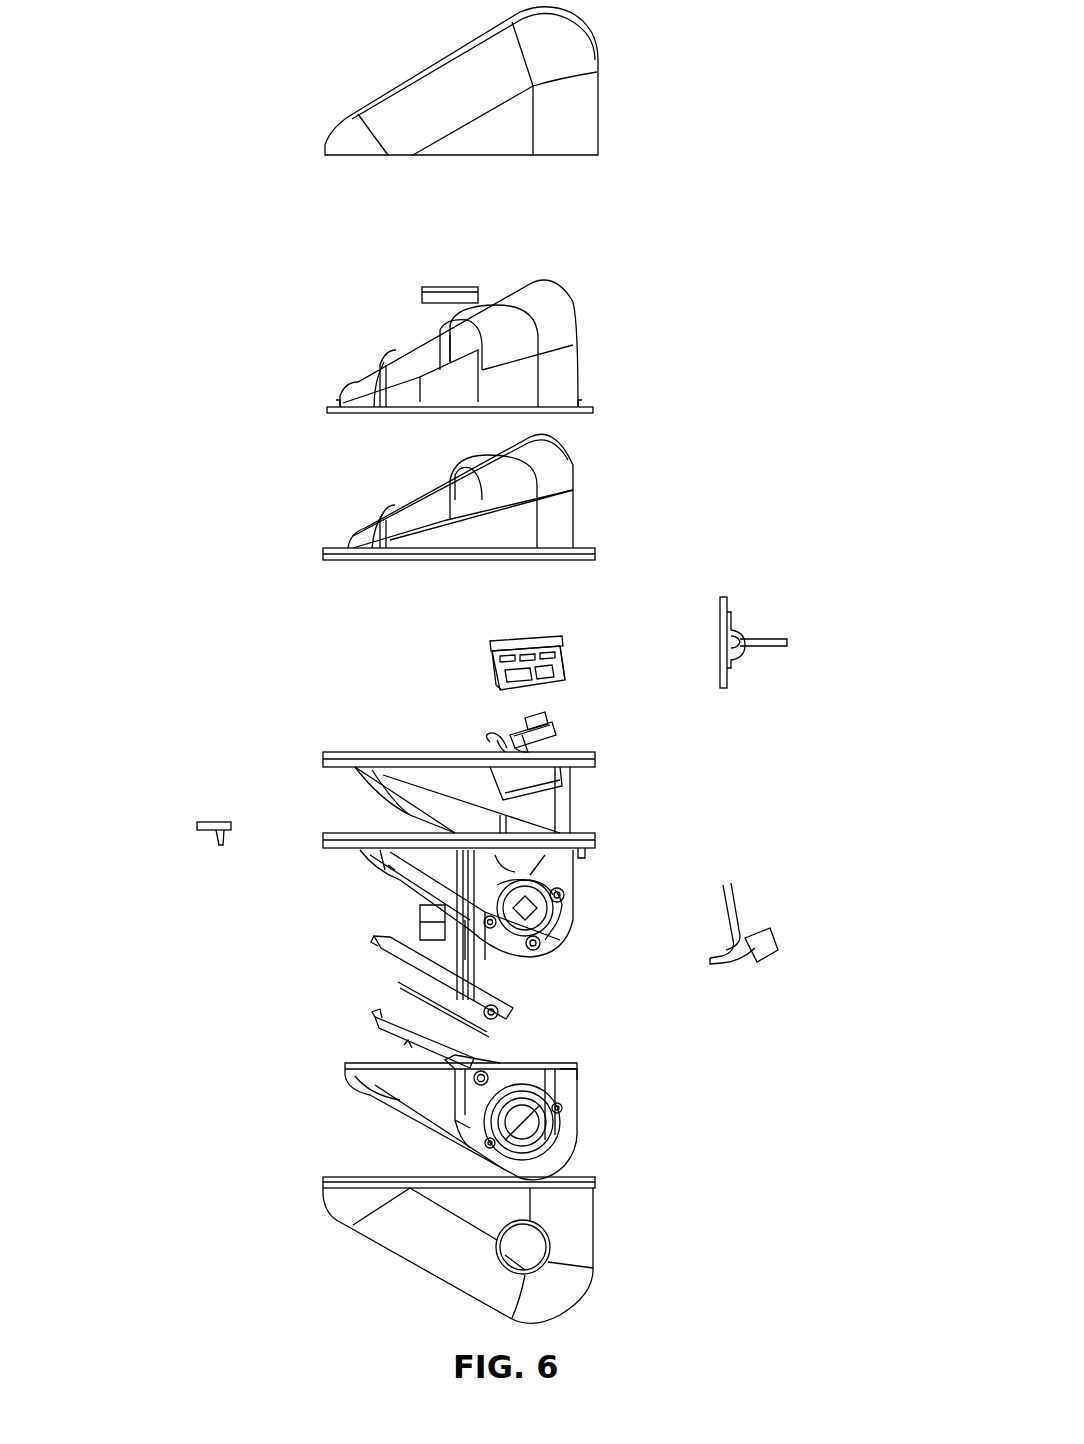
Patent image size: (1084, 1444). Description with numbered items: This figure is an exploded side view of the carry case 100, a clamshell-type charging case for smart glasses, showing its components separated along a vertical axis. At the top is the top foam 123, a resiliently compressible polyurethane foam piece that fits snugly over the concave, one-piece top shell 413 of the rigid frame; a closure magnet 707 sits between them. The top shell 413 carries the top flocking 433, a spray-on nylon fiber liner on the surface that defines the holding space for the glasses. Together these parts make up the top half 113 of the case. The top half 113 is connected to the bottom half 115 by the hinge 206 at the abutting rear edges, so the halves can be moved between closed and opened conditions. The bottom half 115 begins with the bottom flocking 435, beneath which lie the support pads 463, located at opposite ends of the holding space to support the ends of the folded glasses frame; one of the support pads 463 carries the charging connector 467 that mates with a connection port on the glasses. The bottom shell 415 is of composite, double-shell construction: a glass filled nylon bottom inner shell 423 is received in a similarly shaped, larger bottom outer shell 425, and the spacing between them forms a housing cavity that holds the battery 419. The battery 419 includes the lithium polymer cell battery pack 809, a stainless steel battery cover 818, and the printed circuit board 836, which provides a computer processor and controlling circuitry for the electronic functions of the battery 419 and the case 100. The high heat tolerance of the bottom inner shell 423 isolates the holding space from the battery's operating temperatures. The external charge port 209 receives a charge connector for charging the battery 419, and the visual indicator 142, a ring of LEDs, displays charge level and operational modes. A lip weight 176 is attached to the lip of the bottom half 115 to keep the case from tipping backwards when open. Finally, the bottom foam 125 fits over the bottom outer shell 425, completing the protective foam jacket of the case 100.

The carry case 100 is at (712, 232).
The top half 113 is at (238, 298).
The bottom half 115 is at (262, 1032).
The top foam 123 is at (572, 38).
The bottom foam 125 is at (575, 1296).
The visual indicator 142 is at (563, 1127).
The lip weight 176 is at (208, 822).
The hinge 206 is at (743, 640).
The external charge port 209 is at (768, 956).
The top shell 413 is at (560, 310).
The bottom shell 415 is at (612, 930).
The battery 419 is at (305, 934).
The bottom inner shell 423 is at (420, 890).
The bottom outer shell 425 is at (385, 1100).
The top flocking 433 is at (445, 545).
The bottom flocking 435 is at (430, 776).
The support pads 463 is at (535, 642).
The charging connector 467 is at (545, 726).
The closure magnets 707 is at (445, 294).
The lithium polymer cell battery pack 809 is at (380, 942).
The battery cover 818 is at (380, 1016).
The printed circuit board 836 is at (563, 910).